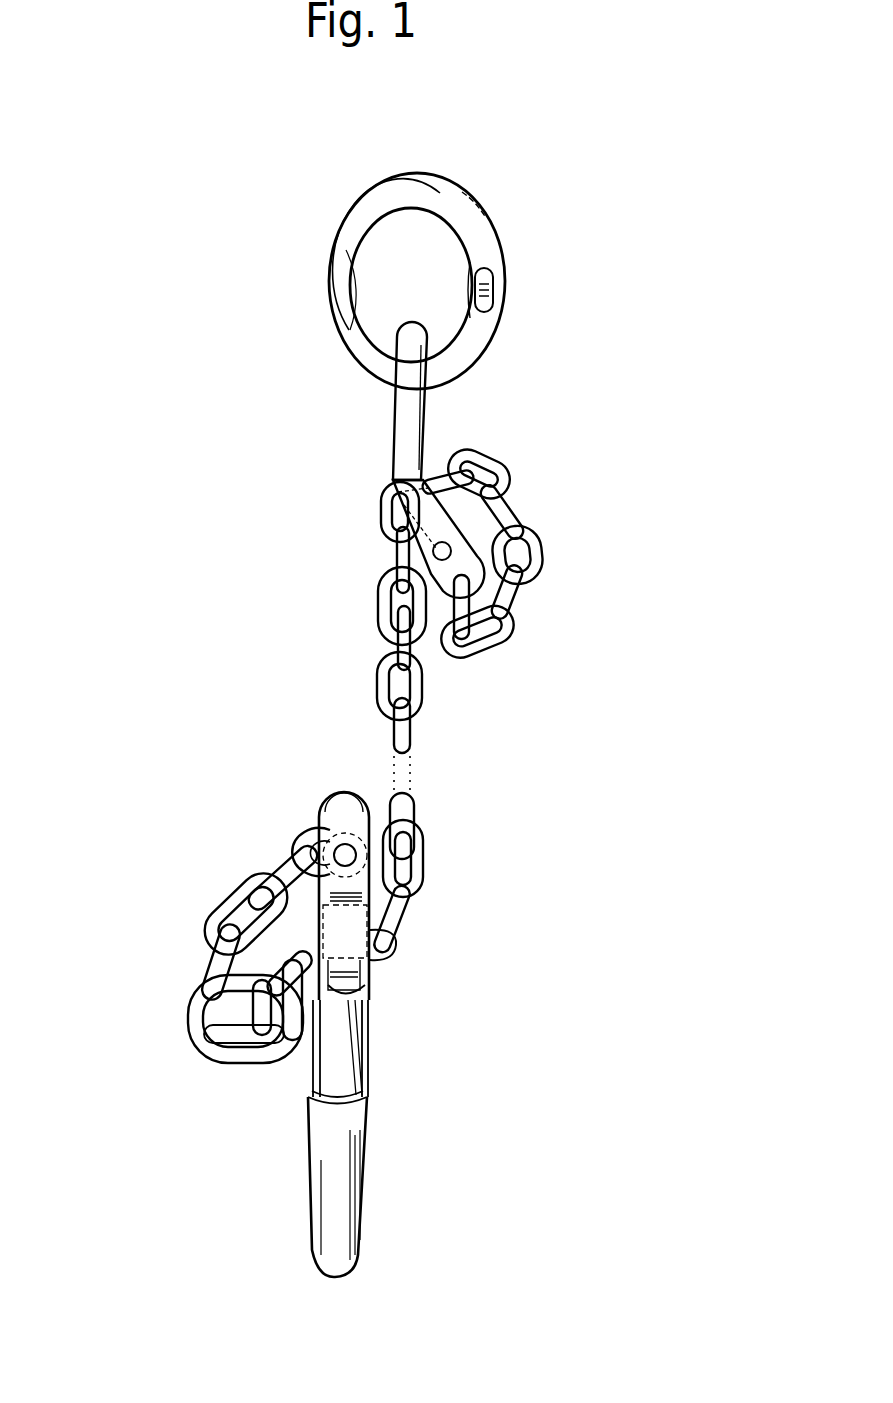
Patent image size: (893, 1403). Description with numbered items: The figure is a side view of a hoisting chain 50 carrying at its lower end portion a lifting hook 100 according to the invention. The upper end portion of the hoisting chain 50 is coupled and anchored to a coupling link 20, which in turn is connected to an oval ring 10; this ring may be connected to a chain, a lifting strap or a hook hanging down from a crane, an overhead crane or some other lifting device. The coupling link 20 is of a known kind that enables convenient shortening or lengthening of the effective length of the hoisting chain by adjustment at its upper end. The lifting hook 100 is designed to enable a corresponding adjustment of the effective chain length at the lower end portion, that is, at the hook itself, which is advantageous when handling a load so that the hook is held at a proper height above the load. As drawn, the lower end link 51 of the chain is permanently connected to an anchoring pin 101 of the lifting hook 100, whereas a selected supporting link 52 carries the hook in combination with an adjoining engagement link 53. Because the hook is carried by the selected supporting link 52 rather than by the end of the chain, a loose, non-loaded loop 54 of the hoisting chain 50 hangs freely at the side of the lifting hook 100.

The oval ring 10 is at (341, 272).
The coupling link 20 is at (403, 411).
The hoisting chain 50 is at (346, 672).
The lower end link 51 is at (296, 843).
The supporting link 52 is at (388, 942).
The engagement link 53 is at (352, 992).
The loose, non-loaded loop 54 is at (166, 1024).
The lifting hook 100 is at (378, 1147).
The anchoring pin 101 is at (340, 851).